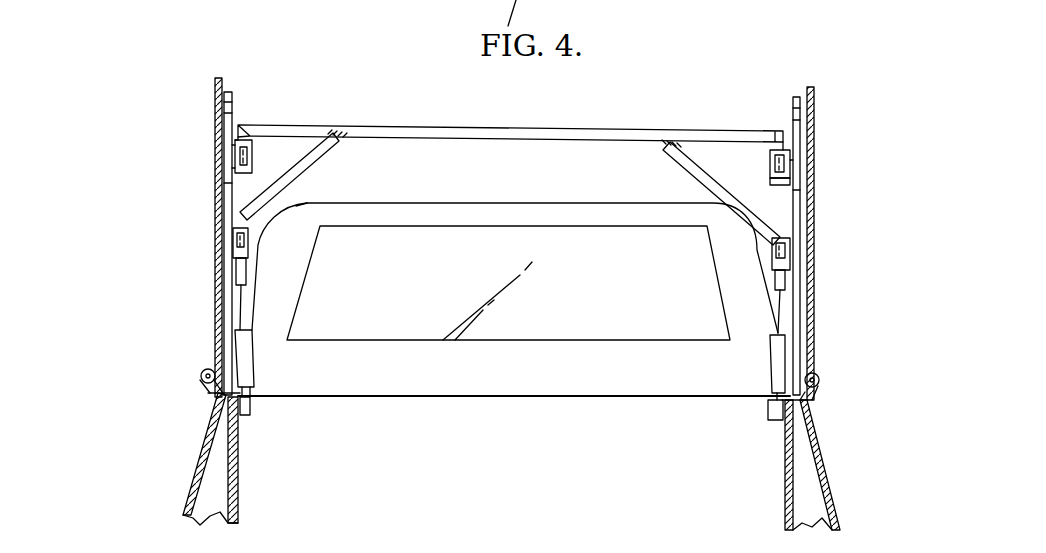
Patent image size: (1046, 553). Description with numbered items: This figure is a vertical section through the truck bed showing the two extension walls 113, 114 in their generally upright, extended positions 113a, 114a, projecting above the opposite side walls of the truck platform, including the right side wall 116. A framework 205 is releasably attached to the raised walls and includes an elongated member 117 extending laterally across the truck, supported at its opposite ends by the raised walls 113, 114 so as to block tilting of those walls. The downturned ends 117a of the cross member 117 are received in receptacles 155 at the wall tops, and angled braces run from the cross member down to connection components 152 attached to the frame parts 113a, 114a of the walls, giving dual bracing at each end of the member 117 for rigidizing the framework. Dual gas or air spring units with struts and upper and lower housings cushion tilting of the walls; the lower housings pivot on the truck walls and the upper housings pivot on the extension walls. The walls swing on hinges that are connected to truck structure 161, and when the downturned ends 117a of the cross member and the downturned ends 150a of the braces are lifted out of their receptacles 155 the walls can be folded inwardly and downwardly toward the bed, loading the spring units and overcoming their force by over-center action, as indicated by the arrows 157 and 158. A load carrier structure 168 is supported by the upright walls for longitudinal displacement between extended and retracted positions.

The extension wall 113 is at (208, 293).
The upright position of extension wall 113a is at (224, 208).
The extension wall 114 is at (822, 172).
The upright position of extension wall 114a is at (800, 241).
The side wall of truck platform 116 is at (846, 481).
The elongated member 117 is at (518, 126).
The downturned end of cross member 117a is at (746, 148).
The downturned end of brace 150a is at (233, 246).
The connection component 152 is at (304, 203).
The receptacle 155 is at (265, 126).
The arrow 157 is at (480, 271).
The arrow 158 is at (545, 266).
The truck structure 161 is at (220, 393).
The load carrier structure 168 is at (229, 144).
The framework 205 is at (364, 112).